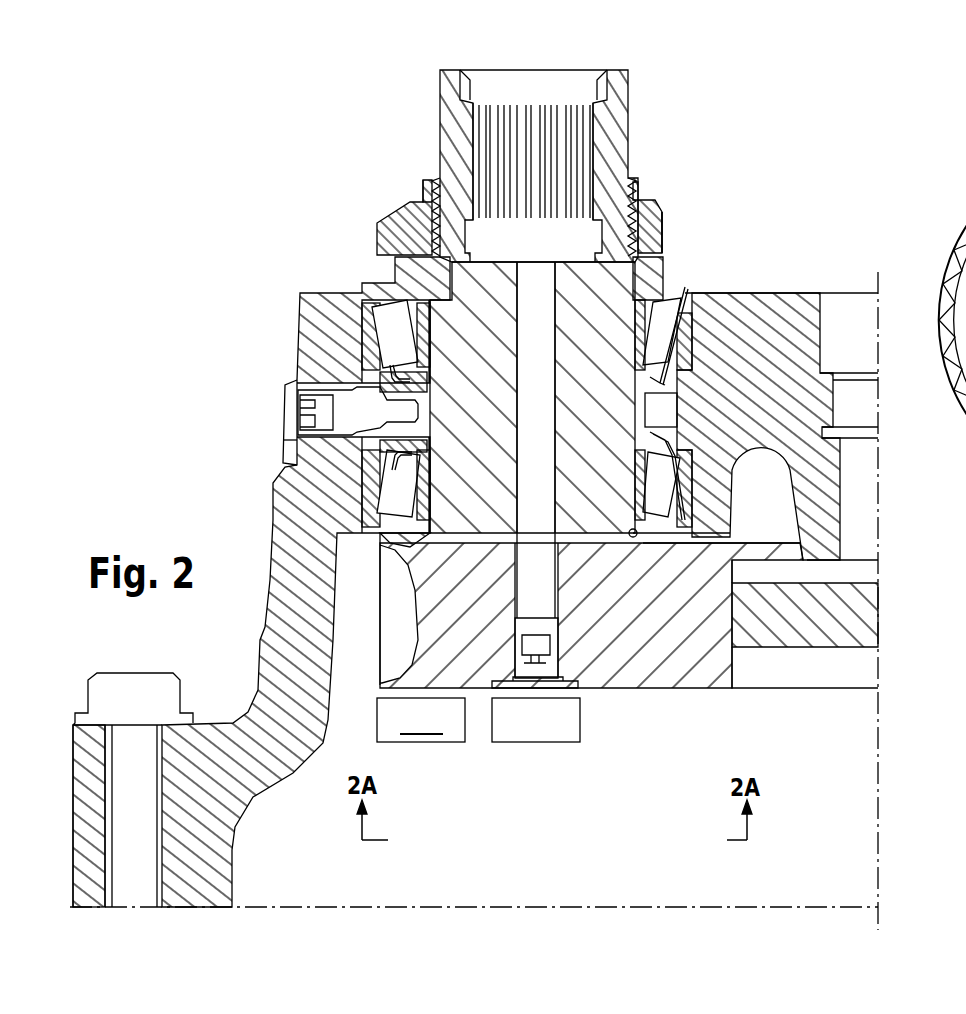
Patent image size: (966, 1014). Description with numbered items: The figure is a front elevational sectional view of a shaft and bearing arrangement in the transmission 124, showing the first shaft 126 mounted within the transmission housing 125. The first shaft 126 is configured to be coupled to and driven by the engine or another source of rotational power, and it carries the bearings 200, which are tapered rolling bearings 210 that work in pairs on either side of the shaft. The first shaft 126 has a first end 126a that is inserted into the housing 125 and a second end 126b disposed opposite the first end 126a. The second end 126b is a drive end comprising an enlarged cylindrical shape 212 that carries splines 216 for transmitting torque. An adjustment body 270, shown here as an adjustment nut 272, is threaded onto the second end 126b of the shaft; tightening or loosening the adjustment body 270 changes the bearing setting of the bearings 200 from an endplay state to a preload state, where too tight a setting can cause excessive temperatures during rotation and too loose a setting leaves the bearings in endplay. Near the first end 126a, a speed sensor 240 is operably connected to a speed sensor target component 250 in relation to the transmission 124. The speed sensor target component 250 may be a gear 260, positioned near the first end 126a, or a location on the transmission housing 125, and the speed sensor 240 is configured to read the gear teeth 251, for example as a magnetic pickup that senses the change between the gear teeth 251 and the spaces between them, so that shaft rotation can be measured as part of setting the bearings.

The bearings 200 is at (352, 212).
The tapered rolling bearings 210 is at (372, 283).
The enlarged cylindrical shape 212 is at (582, 82).
The splines 216 is at (533, 128).
The first shaft 126 is at (530, 268).
The second end 126b is at (470, 150).
The first end 126a is at (543, 550).
The adjustment body 270 is at (658, 200).
The adjustment nut 272 is at (660, 232).
The transmission 124 is at (887, 507).
The transmission housing 125 is at (846, 850).
The speed sensor target component 250 is at (433, 743).
The gear 260 is at (421, 759).
The speed sensor 240 is at (550, 743).
The gear teeth 251 is at (662, 608).